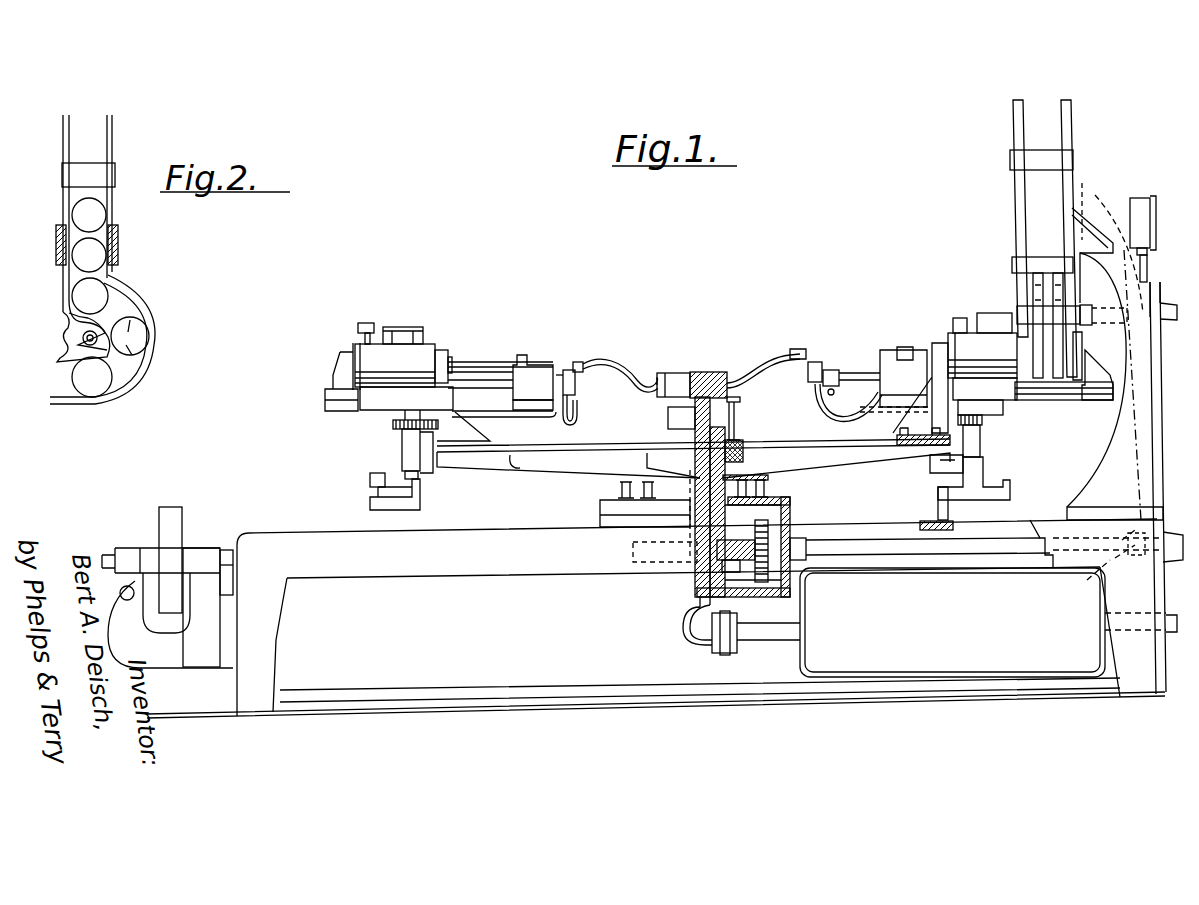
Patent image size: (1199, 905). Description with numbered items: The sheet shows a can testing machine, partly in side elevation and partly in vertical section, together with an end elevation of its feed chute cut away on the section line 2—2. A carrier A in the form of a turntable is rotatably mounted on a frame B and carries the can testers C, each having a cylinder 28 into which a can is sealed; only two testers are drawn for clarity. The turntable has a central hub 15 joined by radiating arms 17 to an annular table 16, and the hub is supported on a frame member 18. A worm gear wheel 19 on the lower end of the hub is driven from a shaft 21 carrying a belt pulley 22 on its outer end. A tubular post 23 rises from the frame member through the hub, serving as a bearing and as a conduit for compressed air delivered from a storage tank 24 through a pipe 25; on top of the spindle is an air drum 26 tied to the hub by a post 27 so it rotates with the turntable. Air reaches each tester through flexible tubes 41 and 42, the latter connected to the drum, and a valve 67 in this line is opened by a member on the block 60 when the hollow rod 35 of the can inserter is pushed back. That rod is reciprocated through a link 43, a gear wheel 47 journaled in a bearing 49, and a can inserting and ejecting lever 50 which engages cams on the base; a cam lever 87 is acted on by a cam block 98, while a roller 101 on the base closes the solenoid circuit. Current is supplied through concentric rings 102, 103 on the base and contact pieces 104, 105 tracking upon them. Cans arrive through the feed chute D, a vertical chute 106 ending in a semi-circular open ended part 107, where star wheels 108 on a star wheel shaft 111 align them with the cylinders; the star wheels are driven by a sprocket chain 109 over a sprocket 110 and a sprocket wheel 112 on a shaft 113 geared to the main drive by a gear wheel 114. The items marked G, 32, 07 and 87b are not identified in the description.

In FIG. 2, the vertical chute 106 is at (113, 125).
In FIG. 1, the vertical chute 106 is at (1012, 130).
In FIG. 2, the feed chute D is at (54, 219).
In FIG. 1, the feed chute D is at (1004, 193).
In FIG. 2, the articles G is at (110, 218).
In FIG. 2, the semi-circular open ended part 107 is at (150, 377).
In FIG. 2, the star wheels 108 is at (120, 310).
In FIG. 1, the star wheels 108 is at (1055, 277).
In FIG. 2, the star wheel shaft 111 is at (98, 338).
In FIG. 1, the star wheel shaft 111 is at (1032, 315).
In FIG. 1, the frame B is at (287, 530).
In FIG. 1, the belt pulley 22 is at (168, 510).
In FIG. 1, the shaft 21 is at (227, 548).
In FIG. 1, the carrier A is at (520, 469).
In FIG. 1, the central hub 15 is at (701, 489).
In FIG. 1, the radiating arms 17 is at (838, 466).
In FIG. 1, the annular table 16 is at (912, 446).
In FIG. 1, the cylinder 28 is at (671, 375).
In FIG. 1, the can testers C is at (403, 321).
In FIG. 1, the bracket 32 is at (352, 350).
In FIG. 1, the hollow rod 35 is at (478, 370).
In FIG. 1, the block 60 is at (528, 368).
In FIG. 1, the valve 67 is at (577, 385).
In FIG. 1, the flexible tube 41 is at (840, 404).
In FIG. 1, the flexible tube 42 is at (612, 372).
In FIG. 1, the air drum 26 is at (670, 372).
In FIG. 1, the valve 07 is at (826, 368).
In FIG. 1, the post 27 is at (738, 414).
In FIG. 1, the tubular post 23 is at (700, 535).
In FIG. 1, the contact piece 104 is at (742, 476).
In FIG. 1, the contact piece 105 is at (762, 477).
In FIG. 1, the concentric ring 103 is at (767, 490).
In FIG. 1, the frame member 18 is at (770, 598).
In FIG. 1, the worm gear wheel 19 is at (770, 528).
In FIG. 1, the gear wheel 114 is at (768, 575).
In FIG. 1, the concentric ring 102 is at (896, 537).
In FIG. 1, the pipe 25 is at (705, 650).
In FIG. 1, the storage tank 24 is at (956, 668).
In FIG. 1, the shaft 113 is at (1020, 552).
In FIG. 1, the sprocket wheel 112 is at (1096, 587).
In FIG. 1, the gear wheel 47 is at (392, 426).
In FIG. 1, the link 43 is at (896, 428).
In FIG. 1, the can inserting and ejecting lever 50 is at (403, 486).
In FIG. 1, the lever 87 is at (370, 502).
In FIG. 1, the section line 2 is at (1080, 176).
In FIG. 1, the sprocket 110 is at (1120, 238).
In FIG. 1, the bearing 49 is at (982, 443).
In FIG. 1, the cam block 98 is at (930, 512).
In FIG. 1, the clamp 87b is at (948, 500).
In FIG. 1, the sprocket chain 109 is at (1125, 456).
In FIG. 1, the roller 101 is at (1111, 471).